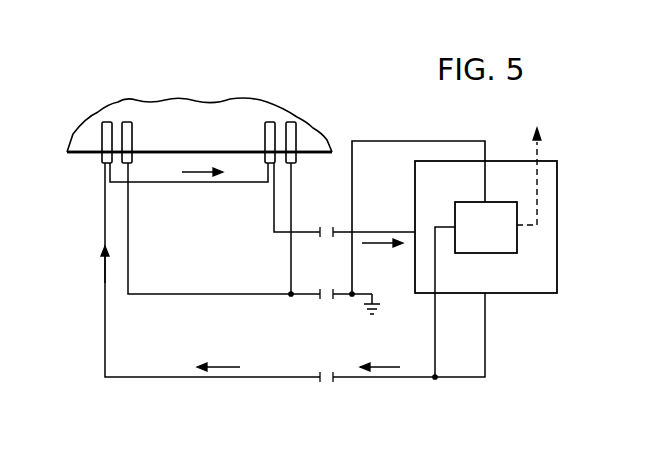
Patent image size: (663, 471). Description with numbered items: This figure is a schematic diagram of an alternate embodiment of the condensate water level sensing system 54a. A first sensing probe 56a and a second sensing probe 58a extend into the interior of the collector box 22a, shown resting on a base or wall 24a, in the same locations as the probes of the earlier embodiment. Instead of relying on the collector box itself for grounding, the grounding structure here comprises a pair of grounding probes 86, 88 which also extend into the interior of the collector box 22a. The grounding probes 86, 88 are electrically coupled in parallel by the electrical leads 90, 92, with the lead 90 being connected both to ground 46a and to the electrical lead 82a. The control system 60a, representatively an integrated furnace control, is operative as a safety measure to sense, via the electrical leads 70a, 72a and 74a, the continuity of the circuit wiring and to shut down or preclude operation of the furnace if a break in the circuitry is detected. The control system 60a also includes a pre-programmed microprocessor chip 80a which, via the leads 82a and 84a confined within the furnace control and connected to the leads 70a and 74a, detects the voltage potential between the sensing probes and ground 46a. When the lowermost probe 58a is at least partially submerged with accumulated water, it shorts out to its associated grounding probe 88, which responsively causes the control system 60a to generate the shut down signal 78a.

The water level sensing system 54a is at (219, 80).
The collector box 22a is at (116, 101).
The substrate 24a is at (87, 153).
The first sensing probe 56a is at (102, 139).
The grounding probe 86 is at (132, 139).
The second sensing probe 58a is at (265, 140).
The grounding probe 88 is at (297, 138).
The electrical lead 72a is at (200, 182).
The electrical lead 74a is at (305, 232).
The electrical lead 92 is at (291, 263).
The electrical lead 90 is at (204, 296).
The ground 46a is at (375, 303).
The electrical lead 82a is at (418, 141).
The control system 60a is at (557, 225).
The microprocessor chip 80a is at (506, 243).
The shut down signal 78a is at (541, 148).
The electrical lead 84a is at (435, 328).
The electrical lead 70a is at (213, 380).